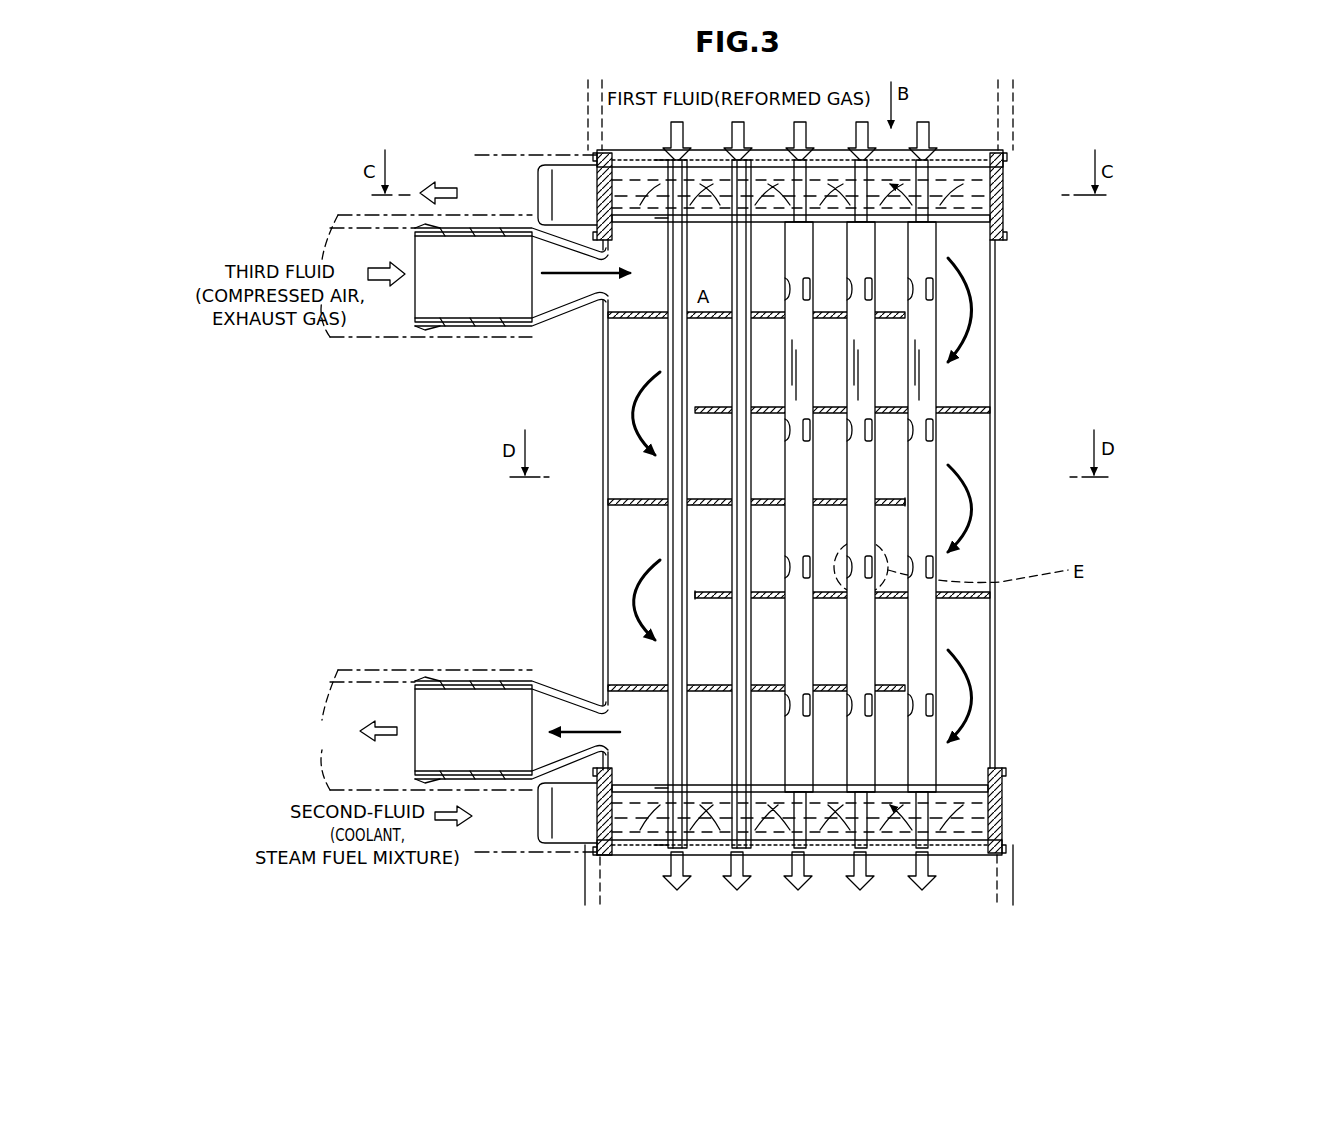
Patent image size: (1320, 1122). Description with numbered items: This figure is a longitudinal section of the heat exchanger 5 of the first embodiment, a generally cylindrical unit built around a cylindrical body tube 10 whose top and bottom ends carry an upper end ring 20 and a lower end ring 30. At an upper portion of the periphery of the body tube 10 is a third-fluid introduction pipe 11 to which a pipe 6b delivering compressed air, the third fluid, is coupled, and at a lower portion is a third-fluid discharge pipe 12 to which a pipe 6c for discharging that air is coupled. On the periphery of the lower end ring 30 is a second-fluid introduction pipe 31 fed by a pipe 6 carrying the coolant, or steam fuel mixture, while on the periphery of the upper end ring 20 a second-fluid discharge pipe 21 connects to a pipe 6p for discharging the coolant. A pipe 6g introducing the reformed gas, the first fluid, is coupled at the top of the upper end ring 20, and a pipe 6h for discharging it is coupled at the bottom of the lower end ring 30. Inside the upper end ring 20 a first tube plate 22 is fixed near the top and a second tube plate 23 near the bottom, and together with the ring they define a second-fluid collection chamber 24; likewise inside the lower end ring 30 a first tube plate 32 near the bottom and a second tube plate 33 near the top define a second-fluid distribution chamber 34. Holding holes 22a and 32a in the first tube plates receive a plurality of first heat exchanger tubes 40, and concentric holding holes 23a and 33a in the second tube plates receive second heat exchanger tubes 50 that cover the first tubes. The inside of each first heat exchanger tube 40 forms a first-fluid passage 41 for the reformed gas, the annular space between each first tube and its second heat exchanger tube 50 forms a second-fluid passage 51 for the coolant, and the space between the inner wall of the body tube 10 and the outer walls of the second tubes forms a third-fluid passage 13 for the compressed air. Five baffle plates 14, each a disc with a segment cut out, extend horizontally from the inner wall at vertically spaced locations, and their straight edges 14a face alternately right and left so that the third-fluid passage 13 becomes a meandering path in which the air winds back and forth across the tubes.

The heat exchanger 5 is at (280, 185).
The body tube 10 is at (995, 515).
The third-fluid introduction pipe 11 is at (470, 330).
The third-fluid discharge pipe 12 is at (480, 680).
The third-fluid passage 13 is at (975, 655).
The baffle plate 14 is at (605, 340).
The straight edge 14a is at (905, 500).
The upper end ring 20 is at (1003, 200).
The second-fluid discharge pipe 21 is at (565, 180).
The first tube plate 22 is at (1005, 162).
The holding hole 22a is at (668, 160).
The second tube plate 23 is at (940, 222).
The holding hole 23a is at (668, 222).
The second-fluid collection chamber 24 is at (975, 210).
The lower end ring 30 is at (1002, 790).
The second-fluid introduction pipe 31 is at (575, 832).
The first tube plate 32 is at (960, 850).
The holding hole 32a is at (668, 846).
The second tube plate 33 is at (955, 780).
The holding hole 33a is at (668, 786).
The second-fluid distribution chamber 34 is at (975, 820).
The first heat exchanger tube 40 is at (1000, 150).
The first-fluid passage 41 is at (676, 517).
The second heat exchanger tube 50 is at (922, 385).
The second-fluid passage 51 is at (668, 543).
The pipe 6 is at (520, 852).
The pipe 6b is at (430, 338).
The pipe 6c is at (430, 670).
The pipe 6g is at (1045, 150).
The pipe 6h is at (1013, 856).
The pipe 6p is at (475, 215).